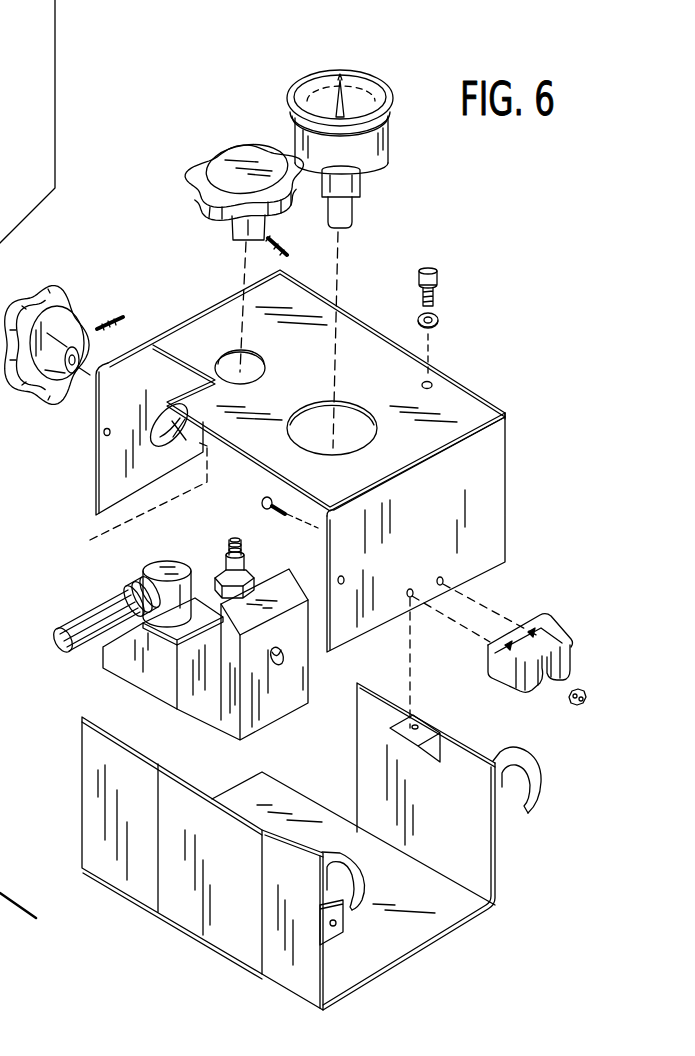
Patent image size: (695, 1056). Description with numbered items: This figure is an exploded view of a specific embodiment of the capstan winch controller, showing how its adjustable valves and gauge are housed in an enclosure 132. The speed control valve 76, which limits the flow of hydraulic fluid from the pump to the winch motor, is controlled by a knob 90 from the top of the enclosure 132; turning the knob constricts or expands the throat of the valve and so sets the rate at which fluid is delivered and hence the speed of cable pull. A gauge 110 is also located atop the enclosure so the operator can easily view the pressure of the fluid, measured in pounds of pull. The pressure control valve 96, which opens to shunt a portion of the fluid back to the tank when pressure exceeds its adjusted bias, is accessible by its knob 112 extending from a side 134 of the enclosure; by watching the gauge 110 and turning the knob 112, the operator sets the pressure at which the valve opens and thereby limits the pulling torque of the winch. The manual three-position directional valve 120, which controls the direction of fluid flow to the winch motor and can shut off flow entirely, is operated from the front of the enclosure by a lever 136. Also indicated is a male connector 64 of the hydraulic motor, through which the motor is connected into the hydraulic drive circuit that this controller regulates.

The male connector 64 is at (0, 48).
The speed control valve 76 is at (202, 545).
The knob 90 is at (243, 145).
The pressure control valve 96 is at (109, 679).
The gauge 110 is at (341, 67).
The knob 112 is at (68, 288).
The directional valve 120 is at (162, 548).
The enclosure 132 is at (488, 396).
The side 134 is at (96, 420).
The lever 136 is at (62, 628).